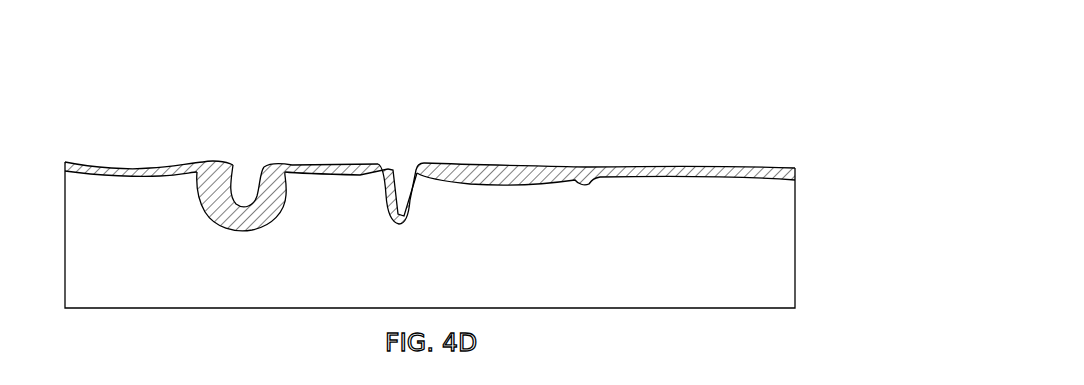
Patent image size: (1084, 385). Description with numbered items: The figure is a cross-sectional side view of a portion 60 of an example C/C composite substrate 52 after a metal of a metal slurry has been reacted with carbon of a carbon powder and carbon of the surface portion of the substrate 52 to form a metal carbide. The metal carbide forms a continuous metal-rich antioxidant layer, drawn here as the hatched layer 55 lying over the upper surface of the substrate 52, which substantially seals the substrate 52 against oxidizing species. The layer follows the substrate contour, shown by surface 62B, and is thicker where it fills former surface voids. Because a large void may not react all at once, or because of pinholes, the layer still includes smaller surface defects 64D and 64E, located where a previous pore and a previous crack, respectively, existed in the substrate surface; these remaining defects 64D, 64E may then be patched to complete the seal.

The portion 60 is at (430, 181).
The C/C composite substrate 52 is at (441, 246).
The film layer 55 is at (707, 167).
The particle defect 62B is at (208, 163).
The surface defect 64D is at (260, 147).
The surface defect 64E is at (409, 146).